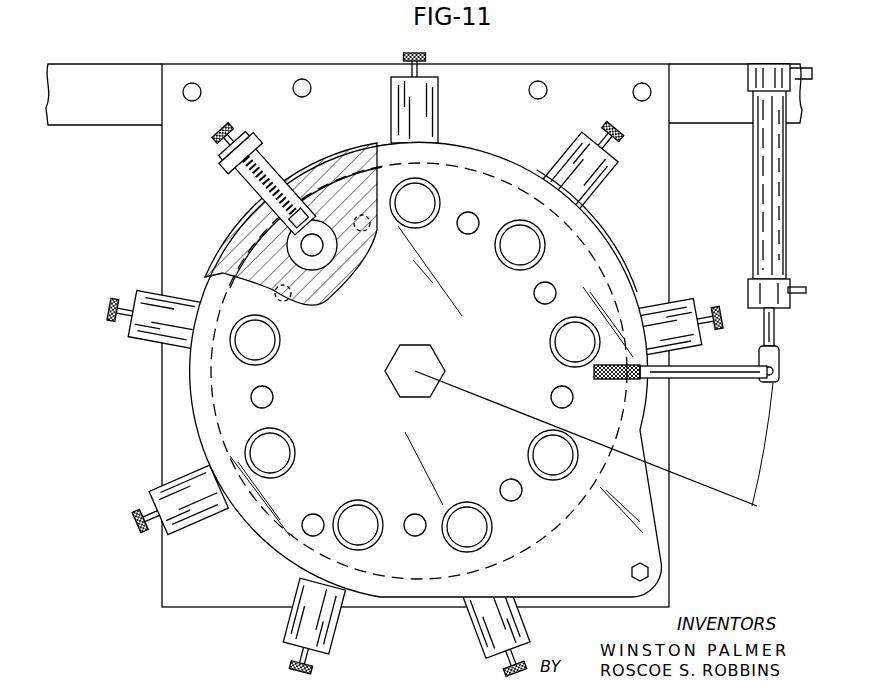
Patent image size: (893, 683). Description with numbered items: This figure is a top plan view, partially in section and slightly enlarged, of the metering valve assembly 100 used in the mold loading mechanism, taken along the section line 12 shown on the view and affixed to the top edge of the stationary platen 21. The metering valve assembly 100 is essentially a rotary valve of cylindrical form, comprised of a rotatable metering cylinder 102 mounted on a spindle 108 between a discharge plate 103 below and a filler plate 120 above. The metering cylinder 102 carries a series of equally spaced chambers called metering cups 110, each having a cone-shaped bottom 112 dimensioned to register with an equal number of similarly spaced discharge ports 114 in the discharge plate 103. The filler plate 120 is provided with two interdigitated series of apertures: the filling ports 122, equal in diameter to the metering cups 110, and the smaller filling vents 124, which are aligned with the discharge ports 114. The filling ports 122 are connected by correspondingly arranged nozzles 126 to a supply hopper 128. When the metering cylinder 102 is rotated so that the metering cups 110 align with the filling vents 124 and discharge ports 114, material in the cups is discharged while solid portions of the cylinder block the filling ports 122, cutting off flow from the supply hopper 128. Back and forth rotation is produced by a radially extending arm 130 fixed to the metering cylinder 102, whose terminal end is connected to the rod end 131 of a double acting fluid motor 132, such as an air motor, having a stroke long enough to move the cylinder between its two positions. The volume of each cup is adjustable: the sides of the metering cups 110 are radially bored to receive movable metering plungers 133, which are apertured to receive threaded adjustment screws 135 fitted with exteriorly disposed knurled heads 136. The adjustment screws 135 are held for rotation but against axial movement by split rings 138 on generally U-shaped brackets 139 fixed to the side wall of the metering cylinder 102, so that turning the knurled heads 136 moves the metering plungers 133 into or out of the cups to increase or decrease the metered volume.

The section line 12- 12 is at (454, 392).
The stationary platen 21 is at (693, 75).
The metering valve assembly 100 is at (208, 626).
The metering cylinder 102 is at (325, 177).
The discharge plate 103 is at (502, 132).
The spindle 108 is at (440, 352).
The metering cups 110 is at (428, 198).
The cone-shaped bottom 112 is at (327, 255).
The discharge ports 114 is at (371, 231).
The filler plate 120 is at (591, 239).
The filling ports 122 is at (512, 261).
The filling vents 124 is at (473, 227).
The nozzles 126 is at (808, 67).
The supply hopper 128 is at (797, 287).
The radially extending arm 130 is at (719, 382).
The rod end 131 is at (781, 322).
The double acting fluid motor 132 is at (753, 240).
The metering plungers 133 is at (305, 228).
The adjustment screws 135 is at (270, 172).
The knurled heads 136 is at (431, 57).
The split rings 138 is at (426, 70).
The U-shaped brackets 139 is at (240, 190).